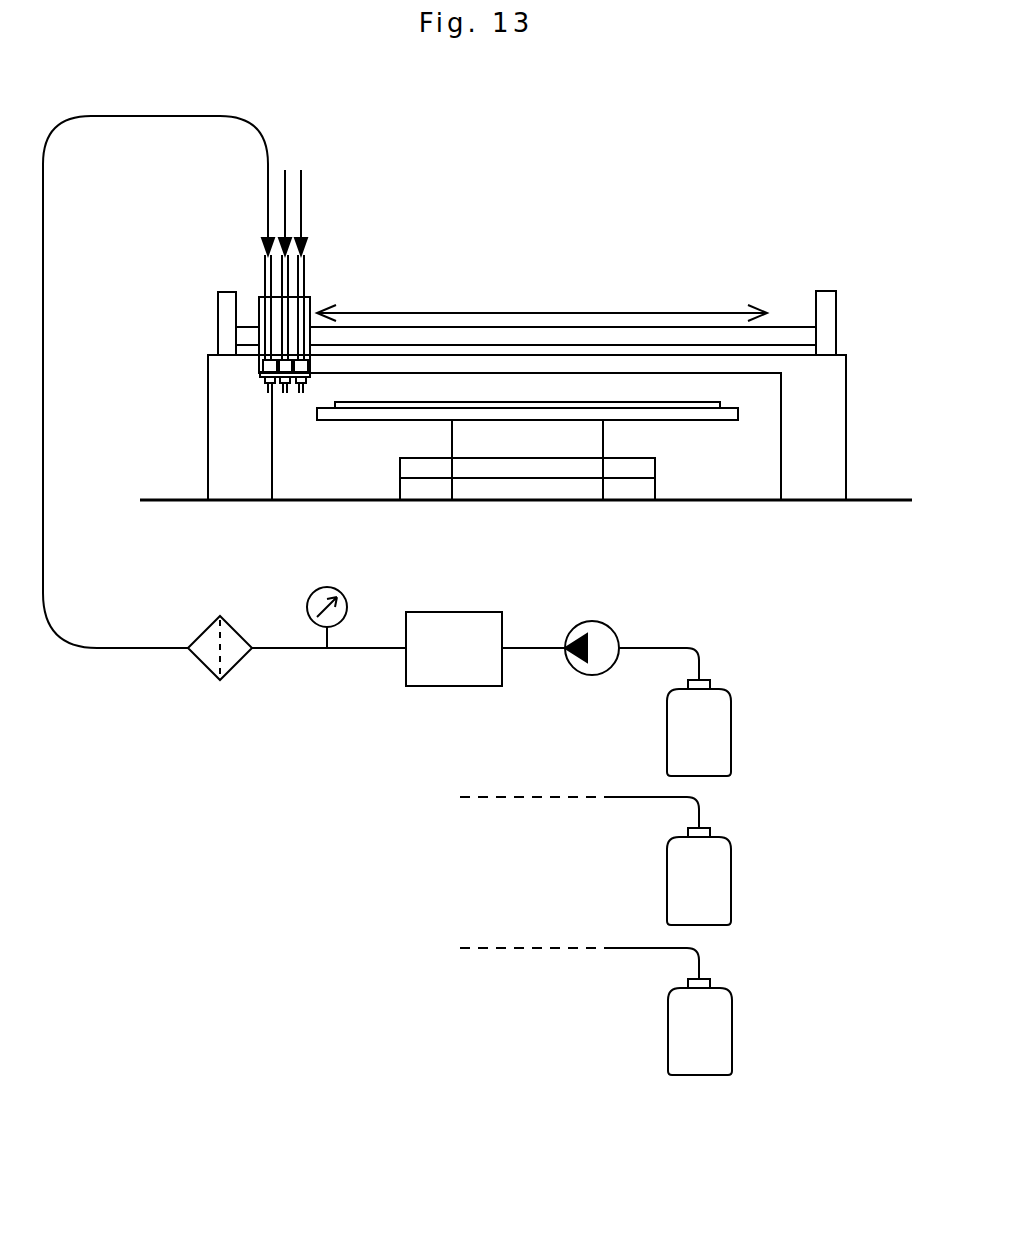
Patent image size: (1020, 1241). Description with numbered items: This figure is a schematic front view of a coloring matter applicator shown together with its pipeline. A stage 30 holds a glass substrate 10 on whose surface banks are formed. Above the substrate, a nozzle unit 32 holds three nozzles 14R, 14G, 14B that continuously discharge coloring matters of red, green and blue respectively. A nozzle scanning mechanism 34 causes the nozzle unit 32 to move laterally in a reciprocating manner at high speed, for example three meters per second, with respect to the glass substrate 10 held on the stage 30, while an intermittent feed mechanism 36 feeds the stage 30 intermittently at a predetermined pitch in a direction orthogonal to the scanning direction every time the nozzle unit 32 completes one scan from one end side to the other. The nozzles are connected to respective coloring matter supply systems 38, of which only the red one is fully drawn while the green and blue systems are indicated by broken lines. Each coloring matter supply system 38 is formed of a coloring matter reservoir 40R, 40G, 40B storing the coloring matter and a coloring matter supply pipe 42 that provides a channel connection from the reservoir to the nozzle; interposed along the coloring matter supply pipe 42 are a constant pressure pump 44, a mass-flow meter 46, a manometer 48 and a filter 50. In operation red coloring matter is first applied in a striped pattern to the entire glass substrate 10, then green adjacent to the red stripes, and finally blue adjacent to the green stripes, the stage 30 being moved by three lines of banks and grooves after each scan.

The glass substrate 10 is at (672, 404).
The nozzle 14R is at (267, 392).
The nozzle 14G is at (285, 396).
The nozzle 14B is at (302, 396).
The stage 30 is at (398, 418).
The nozzle unit 32 is at (316, 296).
The nozzle scanning mechanism 34 is at (766, 300).
The intermittent feed mechanism 36 is at (662, 452).
The coloring matter supply system 38 is at (325, 712).
The coloring matter reservoir 40R is at (713, 726).
The coloring matter reservoir 40G is at (718, 880).
The coloring matter reservoir 40B is at (712, 1025).
The coloring matter supply pipe 42 is at (43, 255).
The constant pressure pump 44 is at (590, 663).
The mass-flow meter 46 is at (443, 670).
The manometer 48 is at (348, 600).
The filter 50 is at (207, 655).